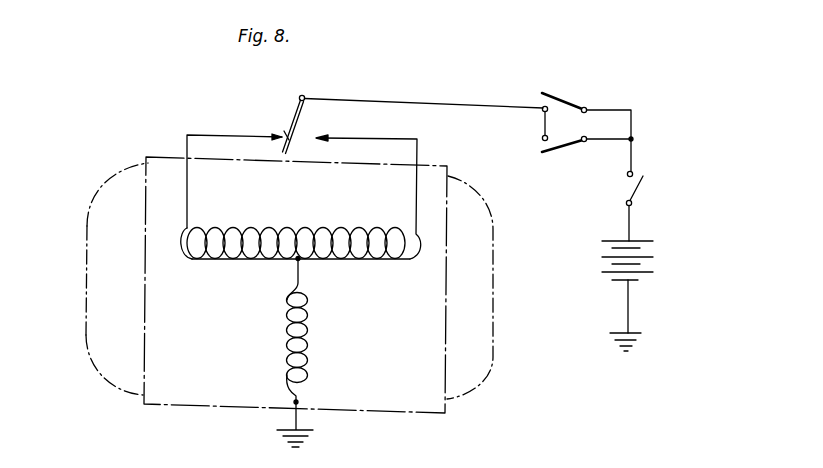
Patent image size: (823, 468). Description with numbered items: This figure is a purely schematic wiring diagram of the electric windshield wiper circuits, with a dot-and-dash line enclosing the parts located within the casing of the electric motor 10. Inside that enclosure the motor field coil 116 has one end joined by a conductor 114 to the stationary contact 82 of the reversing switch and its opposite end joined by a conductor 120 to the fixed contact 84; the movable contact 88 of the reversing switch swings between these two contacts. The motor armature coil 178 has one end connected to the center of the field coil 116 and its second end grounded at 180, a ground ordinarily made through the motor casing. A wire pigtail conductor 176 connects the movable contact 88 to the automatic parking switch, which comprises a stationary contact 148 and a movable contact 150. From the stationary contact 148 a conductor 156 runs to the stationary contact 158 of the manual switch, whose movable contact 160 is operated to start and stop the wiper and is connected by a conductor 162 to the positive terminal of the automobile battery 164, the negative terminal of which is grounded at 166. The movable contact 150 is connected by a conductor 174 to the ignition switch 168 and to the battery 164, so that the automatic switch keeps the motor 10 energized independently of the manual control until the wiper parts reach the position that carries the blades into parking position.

The electric motor 10 is at (112, 268).
The stationary contact 82 is at (287, 133).
The fixed contact 84 is at (318, 136).
The movable contact 88 is at (296, 116).
The conductor 114 is at (187, 192).
The motor field coil 116 is at (237, 259).
The conductor 120 is at (416, 190).
The stationary contact 148 is at (541, 106).
The movable contact 150 is at (564, 99).
The conductor 156 is at (541, 122).
The stationary contact 158 is at (537, 146).
The movable contact 160 is at (555, 153).
The conductor 162 is at (607, 143).
The automobile battery 164 is at (602, 255).
The ground 166 is at (632, 347).
The ignition switch 168 is at (628, 196).
The conductor 174 is at (634, 122).
The conductor 176 is at (412, 100).
The motor armature coil 178 is at (308, 331).
The ground 180 is at (310, 425).